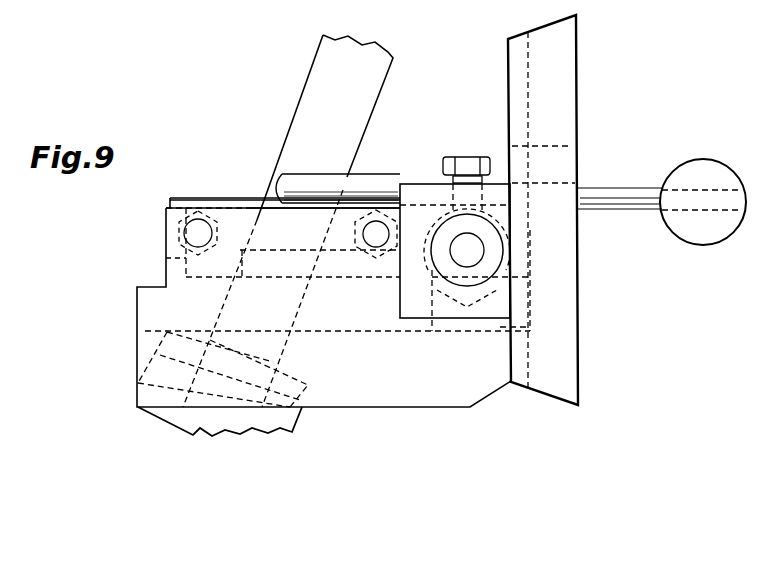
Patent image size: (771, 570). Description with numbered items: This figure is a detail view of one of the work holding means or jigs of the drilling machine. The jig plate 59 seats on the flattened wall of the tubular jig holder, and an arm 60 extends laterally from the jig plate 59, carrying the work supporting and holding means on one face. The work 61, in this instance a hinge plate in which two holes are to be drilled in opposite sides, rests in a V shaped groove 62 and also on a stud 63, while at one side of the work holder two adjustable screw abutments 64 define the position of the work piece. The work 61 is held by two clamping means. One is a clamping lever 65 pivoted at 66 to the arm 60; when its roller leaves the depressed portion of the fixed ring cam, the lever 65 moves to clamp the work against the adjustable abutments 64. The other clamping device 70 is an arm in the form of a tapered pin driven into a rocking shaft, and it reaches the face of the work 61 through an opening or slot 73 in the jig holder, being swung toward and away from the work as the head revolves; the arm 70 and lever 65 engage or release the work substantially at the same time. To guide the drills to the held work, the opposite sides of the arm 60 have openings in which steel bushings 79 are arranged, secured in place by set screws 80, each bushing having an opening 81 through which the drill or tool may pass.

The jig plate 59 is at (577, 110).
The arm 60 is at (140, 352).
The work 61 is at (172, 198).
The V shaped groove 62 is at (530, 312).
The stud 63 is at (166, 258).
The adjustable screw abutment 64 is at (184, 232).
The clamping lever 65 is at (313, 117).
The pivot 66 is at (138, 385).
The clamping device 70 is at (316, 173).
The opening or slot 73 is at (577, 140).
The steel bushing 79 is at (493, 235).
The set screw 80 is at (470, 157).
The opening 81 is at (490, 268).